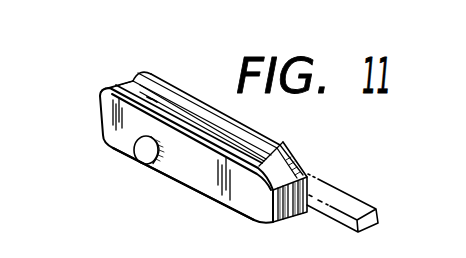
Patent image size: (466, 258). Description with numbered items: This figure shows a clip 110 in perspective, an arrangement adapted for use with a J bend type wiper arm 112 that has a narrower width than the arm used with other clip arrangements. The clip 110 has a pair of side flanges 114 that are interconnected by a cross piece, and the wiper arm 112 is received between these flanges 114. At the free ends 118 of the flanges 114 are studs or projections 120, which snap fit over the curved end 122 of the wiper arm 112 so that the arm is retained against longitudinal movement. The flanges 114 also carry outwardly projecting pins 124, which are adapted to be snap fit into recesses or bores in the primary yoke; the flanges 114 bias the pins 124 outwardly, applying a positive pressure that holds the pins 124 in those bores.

The clip 110 is at (104, 129).
The wiper arm 112 is at (350, 192).
The side flanges 114 is at (207, 185).
The free ends 118 is at (123, 83).
The studs or projections 120 is at (129, 78).
The curved end 122 is at (145, 90).
The pins 124 is at (137, 157).